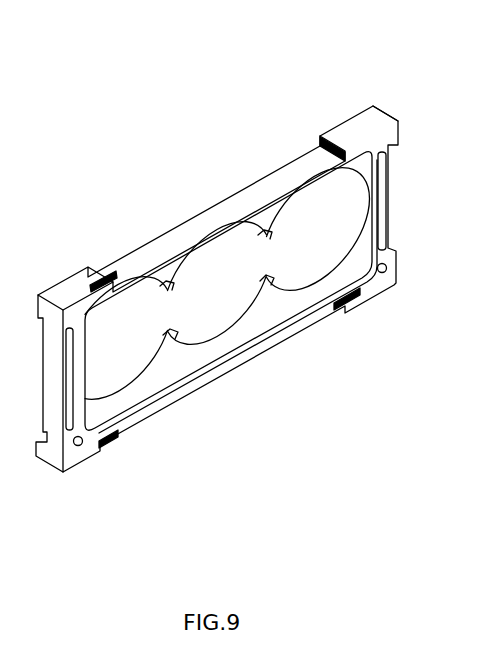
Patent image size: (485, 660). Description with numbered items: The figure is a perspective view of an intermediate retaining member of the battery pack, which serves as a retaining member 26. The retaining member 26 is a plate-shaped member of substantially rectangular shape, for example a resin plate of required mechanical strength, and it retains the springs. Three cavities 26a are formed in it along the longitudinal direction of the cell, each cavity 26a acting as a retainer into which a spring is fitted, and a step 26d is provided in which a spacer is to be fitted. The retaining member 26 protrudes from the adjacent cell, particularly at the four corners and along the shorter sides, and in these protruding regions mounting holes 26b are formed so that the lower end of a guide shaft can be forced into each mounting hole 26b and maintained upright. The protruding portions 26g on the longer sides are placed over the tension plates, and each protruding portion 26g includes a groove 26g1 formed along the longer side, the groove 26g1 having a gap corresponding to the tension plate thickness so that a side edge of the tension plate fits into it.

The retaining member 26 is at (200, 194).
The cavity 26a is at (120, 345).
The mounting hole 26b is at (82, 449).
The step 26d is at (221, 360).
The protruding portion 26g is at (47, 270).
The groove 26g1 is at (112, 287).